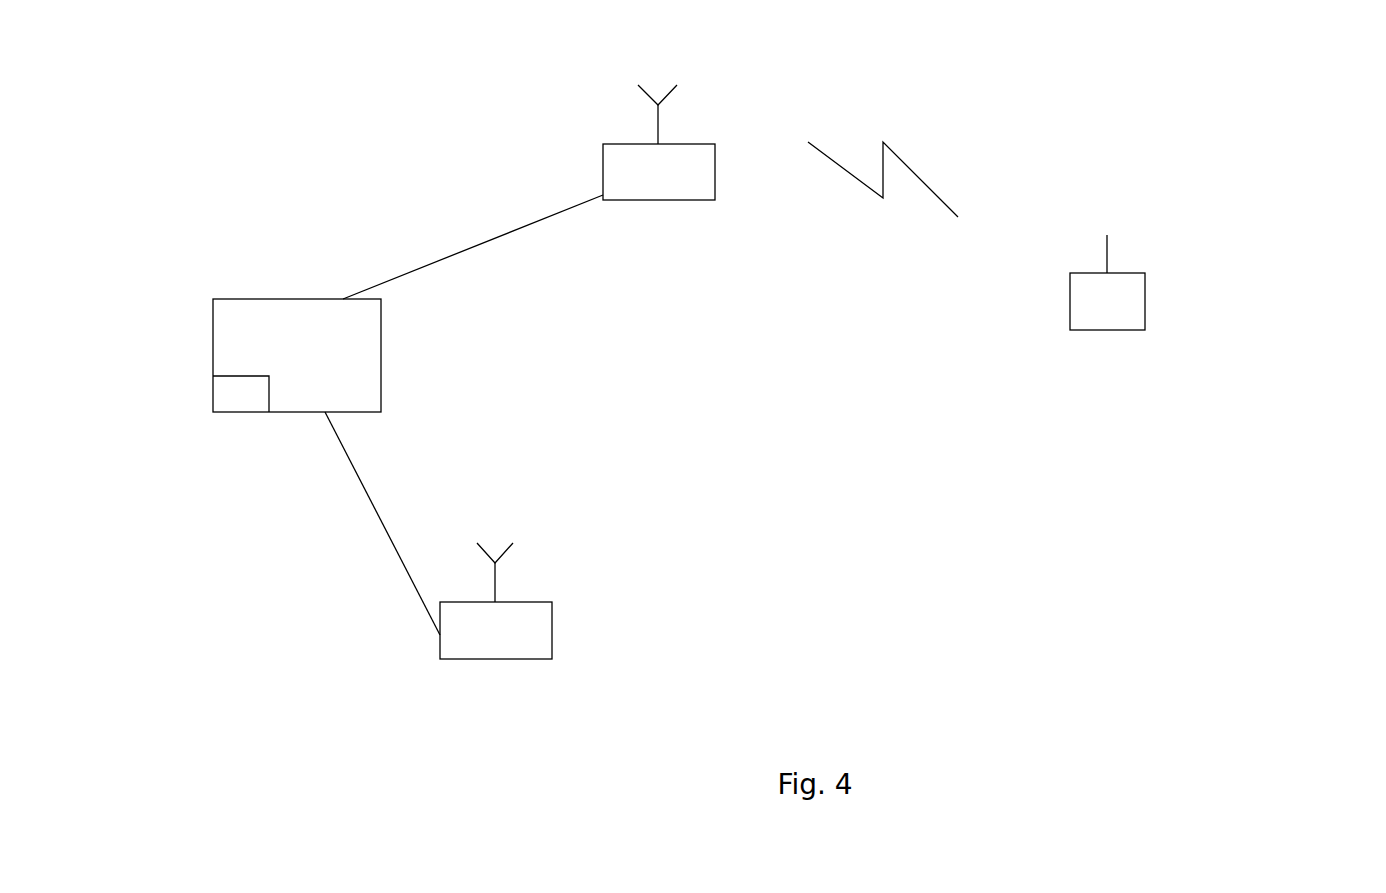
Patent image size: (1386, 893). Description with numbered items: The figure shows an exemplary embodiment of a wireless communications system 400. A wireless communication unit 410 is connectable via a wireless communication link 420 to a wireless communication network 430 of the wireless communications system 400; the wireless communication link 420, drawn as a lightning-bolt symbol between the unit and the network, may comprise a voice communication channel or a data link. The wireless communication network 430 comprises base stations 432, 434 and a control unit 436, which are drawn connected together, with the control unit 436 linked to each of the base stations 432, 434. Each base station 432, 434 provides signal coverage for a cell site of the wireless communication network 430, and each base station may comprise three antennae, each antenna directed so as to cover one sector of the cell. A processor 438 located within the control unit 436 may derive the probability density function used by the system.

The wireless communications system 400 is at (1325, 58).
The wireless communication unit 410 is at (1107, 282).
The wireless communication link 420 is at (891, 164).
The wireless communication network 430 is at (337, 122).
The base station 432 is at (659, 142).
The base station 434 is at (496, 601).
The control unit 436 is at (287, 318).
The processor 438 is at (233, 393).